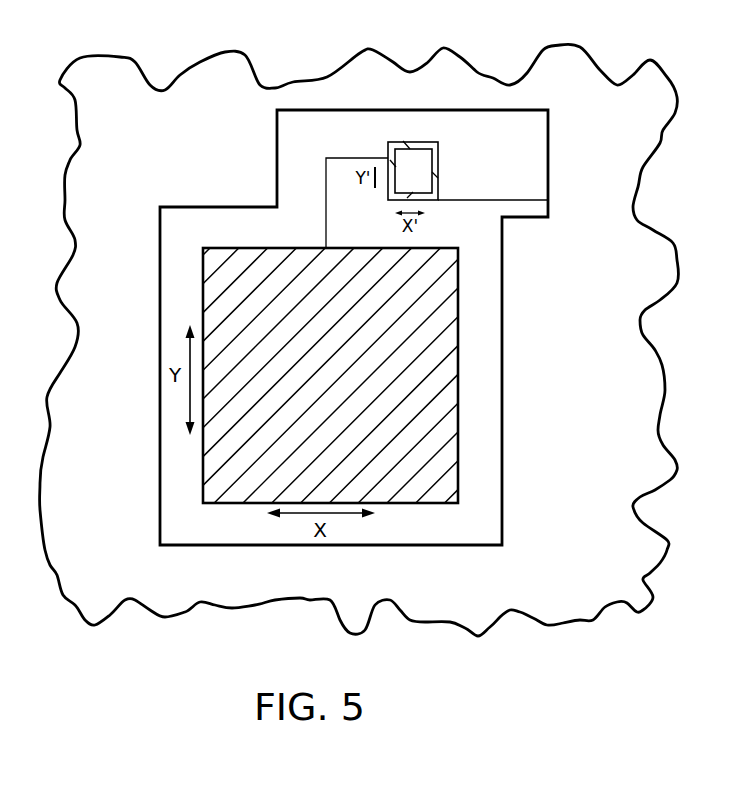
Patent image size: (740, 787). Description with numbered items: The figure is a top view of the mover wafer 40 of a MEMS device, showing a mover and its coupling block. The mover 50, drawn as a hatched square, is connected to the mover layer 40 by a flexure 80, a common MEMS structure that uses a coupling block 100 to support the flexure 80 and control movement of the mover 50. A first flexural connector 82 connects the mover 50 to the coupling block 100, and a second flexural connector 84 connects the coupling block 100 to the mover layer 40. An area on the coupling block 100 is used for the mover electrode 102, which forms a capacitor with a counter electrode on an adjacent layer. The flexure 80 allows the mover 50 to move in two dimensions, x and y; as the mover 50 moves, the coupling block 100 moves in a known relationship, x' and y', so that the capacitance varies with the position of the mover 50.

The mover wafer 40 is at (617, 316).
The mover 50 is at (389, 306).
The flexure 80 is at (414, 134).
The first flexural connector 82 is at (335, 158).
The second flexural connector 84 is at (492, 201).
The coupling block 100 is at (425, 148).
The mover electrode 102 is at (415, 185).